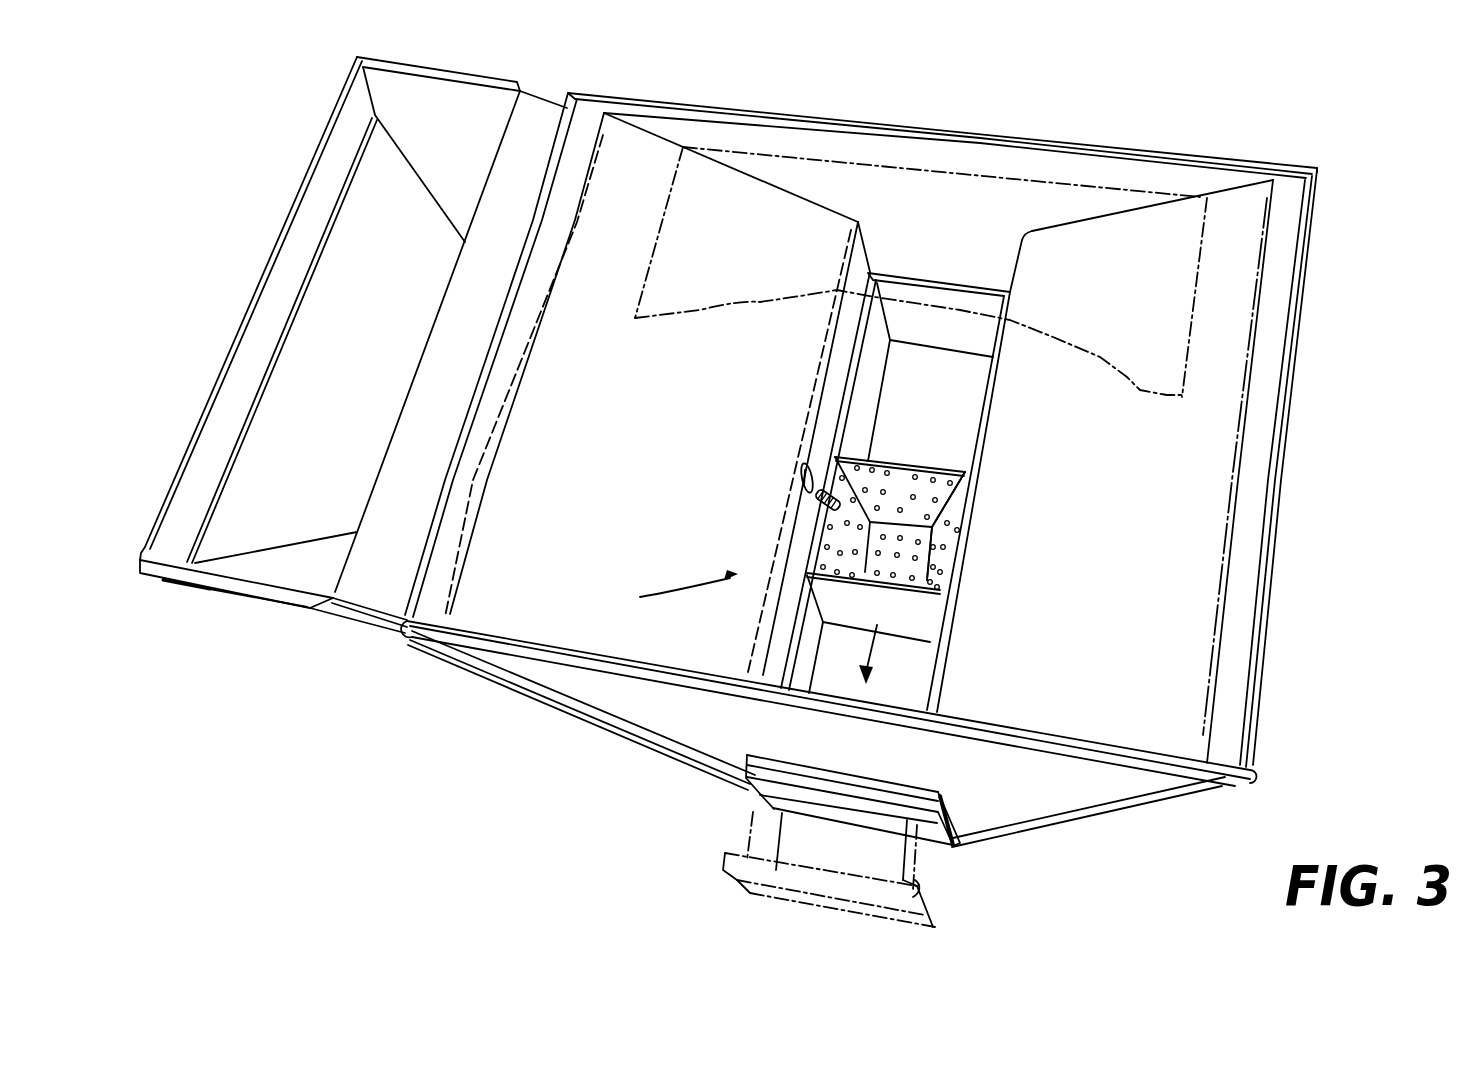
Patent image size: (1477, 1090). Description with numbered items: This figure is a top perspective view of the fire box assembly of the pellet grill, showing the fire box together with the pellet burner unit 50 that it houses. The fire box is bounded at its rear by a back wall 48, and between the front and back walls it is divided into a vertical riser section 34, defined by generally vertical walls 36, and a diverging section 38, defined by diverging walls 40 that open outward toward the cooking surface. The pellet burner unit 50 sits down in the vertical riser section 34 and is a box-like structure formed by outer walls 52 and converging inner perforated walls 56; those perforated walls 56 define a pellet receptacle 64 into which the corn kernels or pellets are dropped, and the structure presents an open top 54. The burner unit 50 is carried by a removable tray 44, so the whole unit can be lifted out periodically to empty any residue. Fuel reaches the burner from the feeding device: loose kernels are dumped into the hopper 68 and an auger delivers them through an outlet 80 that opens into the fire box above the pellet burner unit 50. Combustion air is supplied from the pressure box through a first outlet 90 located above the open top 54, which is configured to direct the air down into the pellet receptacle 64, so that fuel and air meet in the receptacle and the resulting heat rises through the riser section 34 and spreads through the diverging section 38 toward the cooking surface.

The vertical riser section 34 is at (950, 227).
The vertical walls 36 is at (857, 265).
The diverging section 38 is at (1163, 184).
The diverging walls 40 is at (487, 618).
The removable tray 44 is at (975, 428).
The back wall 48 is at (609, 700).
The pellet burner unit 50 is at (668, 591).
The outer walls 52 is at (923, 613).
The open top 54 is at (933, 470).
The converging inner perforated walls 56 is at (952, 505).
The pellet receptacle 64 is at (898, 491).
The hopper 68 is at (458, 120).
The outlet 80 is at (803, 463).
The first outlet 90 is at (823, 507).